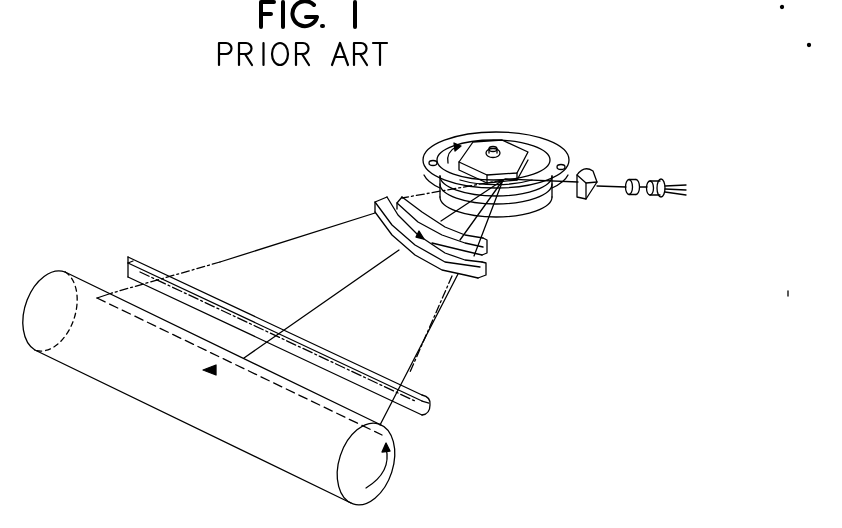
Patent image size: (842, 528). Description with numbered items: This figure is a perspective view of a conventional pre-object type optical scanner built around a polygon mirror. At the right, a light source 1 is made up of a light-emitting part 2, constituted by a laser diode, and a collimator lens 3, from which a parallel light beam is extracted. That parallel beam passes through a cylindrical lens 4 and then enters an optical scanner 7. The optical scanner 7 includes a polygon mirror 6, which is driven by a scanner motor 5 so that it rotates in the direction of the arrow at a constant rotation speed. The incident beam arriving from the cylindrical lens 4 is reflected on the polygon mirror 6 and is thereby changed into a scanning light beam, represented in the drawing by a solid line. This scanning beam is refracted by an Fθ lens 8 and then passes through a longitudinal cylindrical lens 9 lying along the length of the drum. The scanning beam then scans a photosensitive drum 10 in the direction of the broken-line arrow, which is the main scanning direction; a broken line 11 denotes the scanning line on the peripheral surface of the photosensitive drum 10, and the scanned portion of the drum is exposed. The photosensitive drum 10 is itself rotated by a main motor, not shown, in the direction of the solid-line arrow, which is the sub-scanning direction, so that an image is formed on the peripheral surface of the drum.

The light source 1 is at (647, 181).
The light-emitting part 2 is at (650, 199).
The collimator lens 3 is at (630, 199).
The cylindrical lens 4 is at (588, 170).
The scanner motor 5 is at (528, 210).
The polygon mirror 6 is at (514, 153).
The optical scanner 7 is at (468, 128).
The Fθ lens 8 is at (378, 194).
The longitudinal cylindrical lens 9 is at (425, 398).
The photosensitive drum 10 is at (214, 391).
The scanning line 11 is at (316, 397).